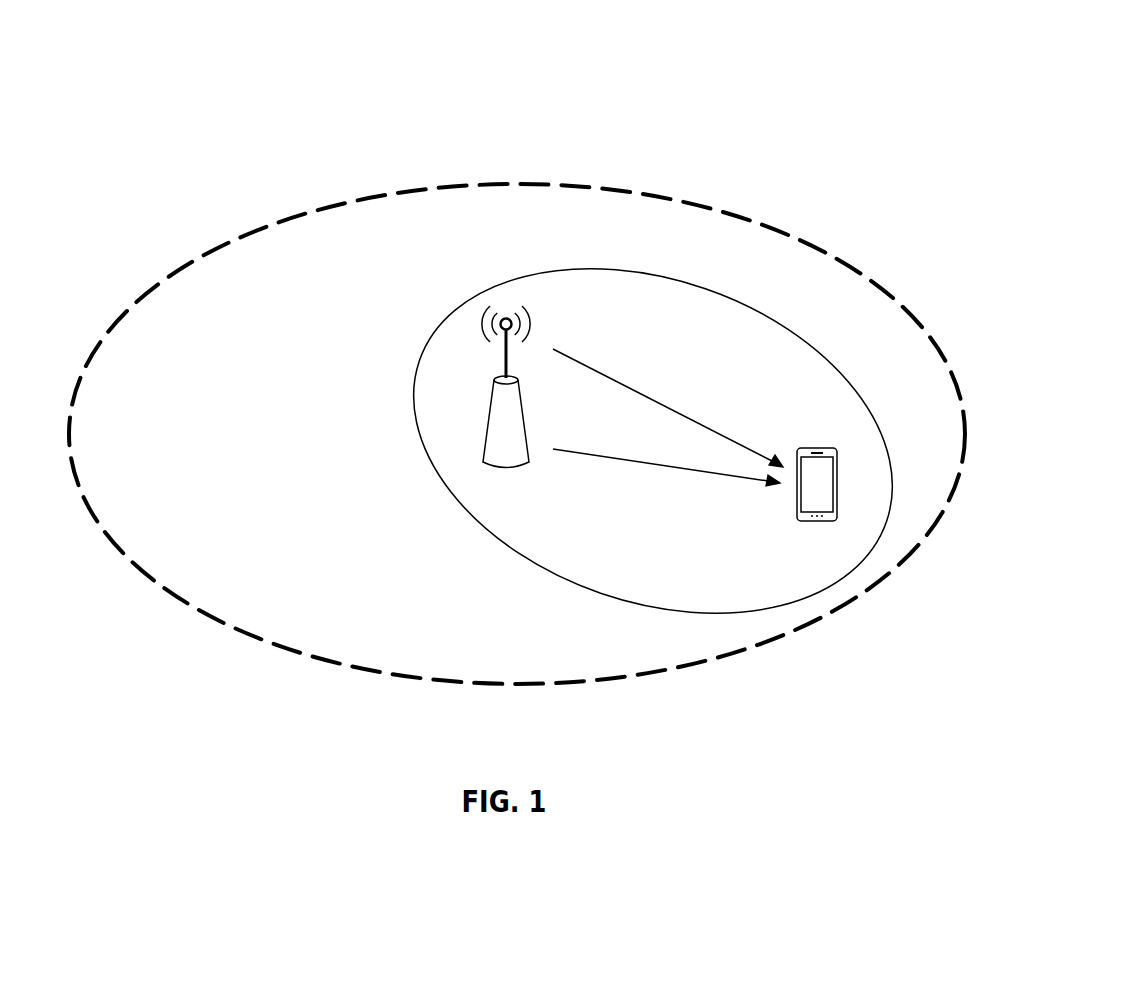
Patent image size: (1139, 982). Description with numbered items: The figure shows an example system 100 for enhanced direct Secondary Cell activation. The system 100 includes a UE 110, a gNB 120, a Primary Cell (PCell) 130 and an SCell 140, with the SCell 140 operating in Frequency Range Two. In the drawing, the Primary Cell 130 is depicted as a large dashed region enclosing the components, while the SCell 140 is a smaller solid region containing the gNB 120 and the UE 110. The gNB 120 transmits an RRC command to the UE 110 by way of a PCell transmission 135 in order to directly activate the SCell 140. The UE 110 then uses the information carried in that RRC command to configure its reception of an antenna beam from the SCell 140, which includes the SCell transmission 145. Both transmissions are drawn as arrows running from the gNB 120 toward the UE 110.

The system 100 is at (935, 128).
The UE 110 is at (817, 513).
The gNB 120 is at (506, 417).
The Primary Cell (PCell) 130 is at (848, 261).
The PCell transmission 135 is at (666, 487).
The SCell 140 is at (888, 525).
The SCell transmission 145 is at (668, 408).